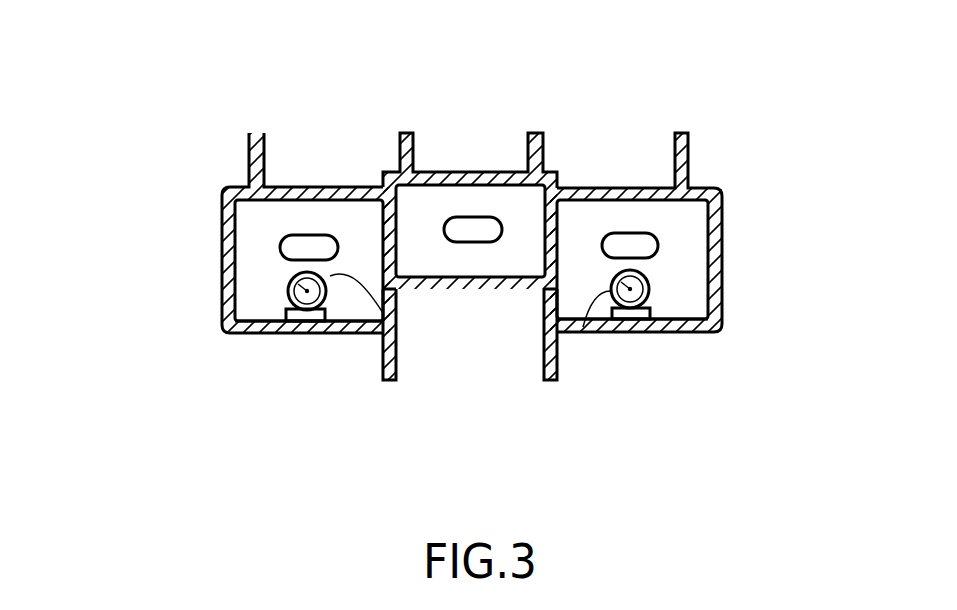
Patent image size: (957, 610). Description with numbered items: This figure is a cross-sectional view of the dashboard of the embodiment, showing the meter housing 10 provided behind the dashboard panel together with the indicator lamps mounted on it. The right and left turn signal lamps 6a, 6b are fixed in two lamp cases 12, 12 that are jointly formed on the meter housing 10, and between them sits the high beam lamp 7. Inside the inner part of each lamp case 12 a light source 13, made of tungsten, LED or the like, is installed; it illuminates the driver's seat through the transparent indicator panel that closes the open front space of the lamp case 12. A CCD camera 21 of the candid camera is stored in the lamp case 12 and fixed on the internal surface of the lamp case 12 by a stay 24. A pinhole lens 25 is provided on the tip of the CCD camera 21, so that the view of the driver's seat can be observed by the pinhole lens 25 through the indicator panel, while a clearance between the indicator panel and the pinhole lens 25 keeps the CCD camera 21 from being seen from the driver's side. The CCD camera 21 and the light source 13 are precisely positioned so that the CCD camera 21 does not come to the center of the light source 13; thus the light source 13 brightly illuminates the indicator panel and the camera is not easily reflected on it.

The turn signal lamp 6a is at (738, 182).
The turn signal lamp 6b is at (210, 225).
The high beam lamp 7 is at (458, 152).
The meter housing 10 is at (395, 360).
The lamp case 12 is at (251, 334).
The light source 13 is at (305, 238).
The CCD camera 21 is at (288, 292).
The stay 24 is at (302, 322).
The pinhole lens 25 is at (383, 313).